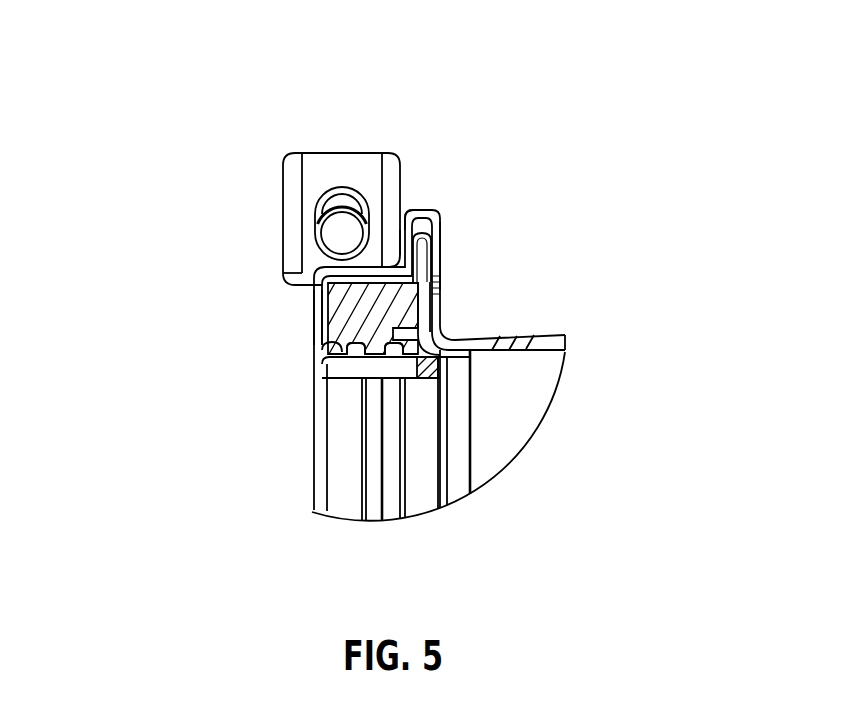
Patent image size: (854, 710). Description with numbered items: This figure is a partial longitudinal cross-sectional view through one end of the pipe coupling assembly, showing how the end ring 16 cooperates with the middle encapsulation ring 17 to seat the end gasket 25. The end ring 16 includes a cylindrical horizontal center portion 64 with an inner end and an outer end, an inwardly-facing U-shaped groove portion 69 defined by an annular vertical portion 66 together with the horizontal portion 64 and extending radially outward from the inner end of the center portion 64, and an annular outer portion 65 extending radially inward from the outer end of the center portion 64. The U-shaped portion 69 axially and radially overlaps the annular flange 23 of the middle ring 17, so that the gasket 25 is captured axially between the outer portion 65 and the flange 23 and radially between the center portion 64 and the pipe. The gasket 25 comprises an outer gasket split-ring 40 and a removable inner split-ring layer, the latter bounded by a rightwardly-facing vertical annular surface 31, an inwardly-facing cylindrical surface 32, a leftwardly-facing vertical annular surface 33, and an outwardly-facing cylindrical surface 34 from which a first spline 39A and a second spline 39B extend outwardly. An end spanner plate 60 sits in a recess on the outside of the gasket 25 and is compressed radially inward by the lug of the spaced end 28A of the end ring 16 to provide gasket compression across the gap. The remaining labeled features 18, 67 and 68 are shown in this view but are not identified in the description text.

The bracket 16 is at (448, 198).
The flange 17 is at (569, 326).
The housing 18 is at (262, 222).
The channel 23 is at (441, 314).
The body 25 is at (347, 505).
The fastener 28A is at (331, 122).
The seal block 31 is at (440, 370).
The outer wall 32 is at (400, 360).
The upper corner 33 is at (322, 359).
The hook end 34 is at (326, 347).
The first recess 39A is at (356, 368).
The second recess 39B is at (400, 366).
The clip 40 is at (326, 310).
The insert 60 is at (385, 288).
The top wall 64 is at (372, 254).
The side wall 65 is at (302, 319).
The gap 66 is at (395, 223).
The bend 67 is at (431, 198).
The boss 68 is at (456, 246).
The outer wall of bracket 69 is at (475, 212).